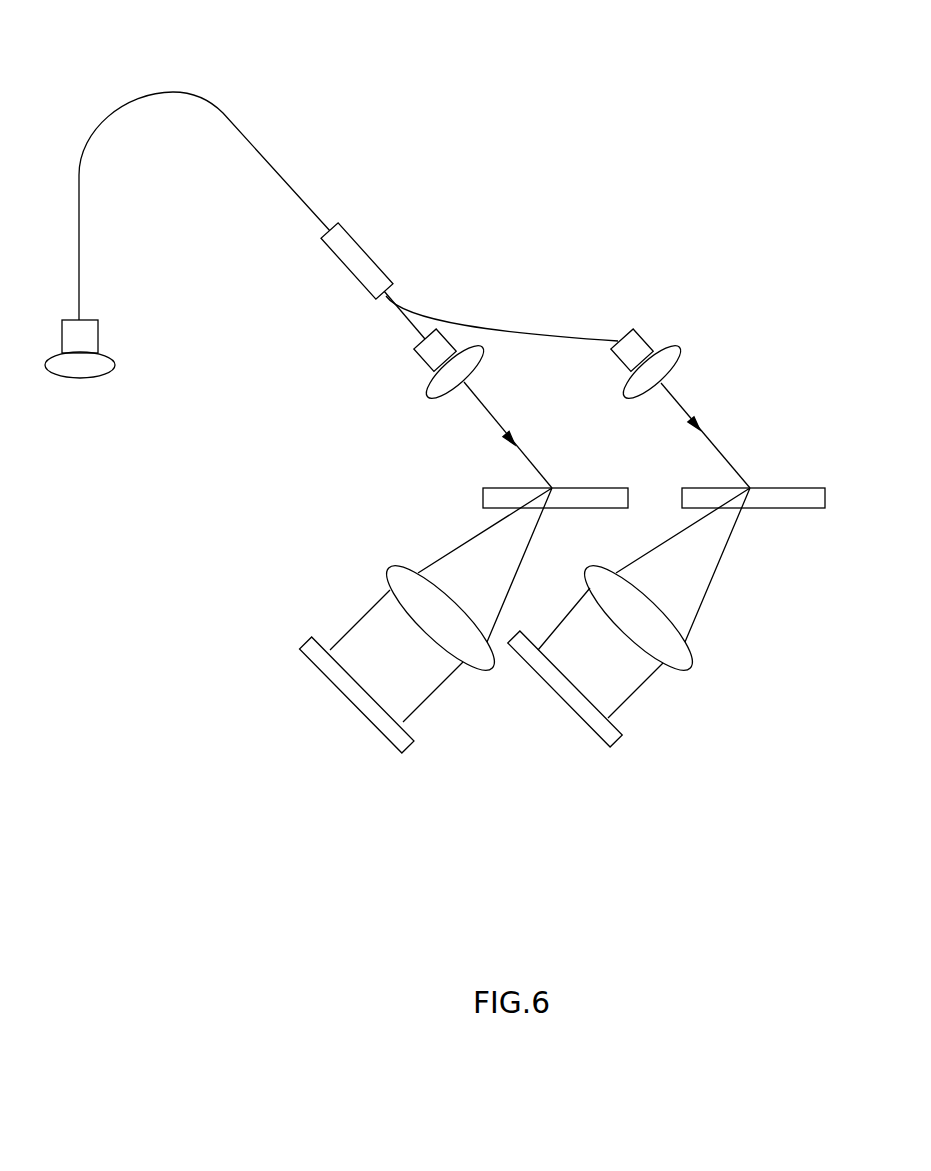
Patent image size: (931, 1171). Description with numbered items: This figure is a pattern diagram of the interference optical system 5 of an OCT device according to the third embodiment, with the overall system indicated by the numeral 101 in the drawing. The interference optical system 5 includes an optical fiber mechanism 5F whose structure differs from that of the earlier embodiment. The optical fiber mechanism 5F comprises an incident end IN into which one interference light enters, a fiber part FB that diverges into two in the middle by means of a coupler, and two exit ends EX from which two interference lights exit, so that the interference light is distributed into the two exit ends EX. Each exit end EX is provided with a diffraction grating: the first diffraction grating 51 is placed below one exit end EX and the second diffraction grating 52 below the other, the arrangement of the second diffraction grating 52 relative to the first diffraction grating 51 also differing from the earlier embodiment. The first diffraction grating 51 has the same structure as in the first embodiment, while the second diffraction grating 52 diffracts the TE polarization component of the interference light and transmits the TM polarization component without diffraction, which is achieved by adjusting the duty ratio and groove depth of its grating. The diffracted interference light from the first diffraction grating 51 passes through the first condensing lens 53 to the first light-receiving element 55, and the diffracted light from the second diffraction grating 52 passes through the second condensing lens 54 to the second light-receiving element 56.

The endoscope system 101 is at (700, 120).
The interference optical system 5 is at (633, 115).
The optical fiber mechanism 5F is at (367, 160).
The fiber part FB is at (222, 113).
The incident end IN is at (98, 335).
The exit end EX is at (422, 366).
The first diffraction grating 51 is at (584, 488).
The second diffraction grating 52 is at (794, 488).
The first condensing lens 53 is at (391, 568).
The second condensing lens 54 is at (690, 668).
The first light-receiving element 55 is at (350, 703).
The second light-receiving element 56 is at (558, 697).